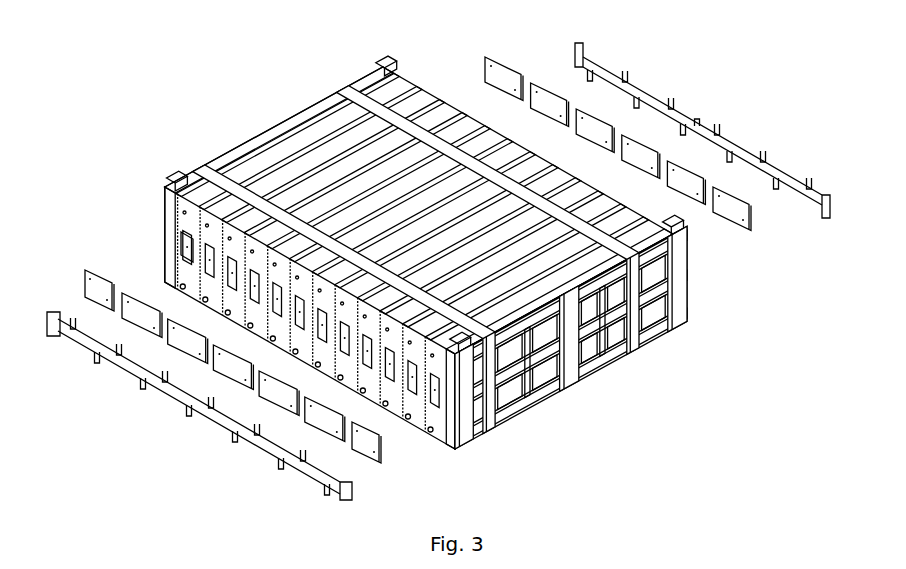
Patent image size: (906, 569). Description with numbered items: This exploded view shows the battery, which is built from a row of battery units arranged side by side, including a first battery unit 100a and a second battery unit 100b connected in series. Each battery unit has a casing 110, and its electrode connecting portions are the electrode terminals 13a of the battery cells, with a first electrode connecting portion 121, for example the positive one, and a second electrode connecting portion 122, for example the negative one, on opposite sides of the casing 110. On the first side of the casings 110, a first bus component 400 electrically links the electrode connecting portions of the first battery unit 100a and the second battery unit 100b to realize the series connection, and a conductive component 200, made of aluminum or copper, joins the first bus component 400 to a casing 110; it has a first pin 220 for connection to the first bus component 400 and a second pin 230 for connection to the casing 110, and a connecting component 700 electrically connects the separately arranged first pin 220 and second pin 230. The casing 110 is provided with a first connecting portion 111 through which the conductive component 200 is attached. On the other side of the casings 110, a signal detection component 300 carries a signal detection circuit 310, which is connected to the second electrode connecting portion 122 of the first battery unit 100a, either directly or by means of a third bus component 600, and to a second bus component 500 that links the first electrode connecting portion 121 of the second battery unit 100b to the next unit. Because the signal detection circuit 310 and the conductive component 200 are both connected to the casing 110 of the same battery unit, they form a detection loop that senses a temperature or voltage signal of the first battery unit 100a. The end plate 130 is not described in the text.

The casing 110 is at (436, 432).
The first connecting portion 111 is at (388, 407).
The first electrode connecting portion 121 is at (343, 381).
The second electrode connecting portion 122 is at (338, 350).
The end plate 130 is at (470, 432).
The electrode terminal 13a is at (180, 244).
The first battery unit 100a is at (684, 237).
The second battery unit 100b is at (633, 208).
The conductive component 200 is at (547, 66).
The first pin 220 is at (811, 181).
The second pin 230 is at (822, 215).
The signal detection component 300 is at (222, 421).
The signal detection circuit 310 is at (282, 464).
The first bus component 400 is at (490, 58).
The second bus component 500 is at (138, 290).
The third bus component 600 is at (363, 458).
The connecting component 700 is at (697, 118).